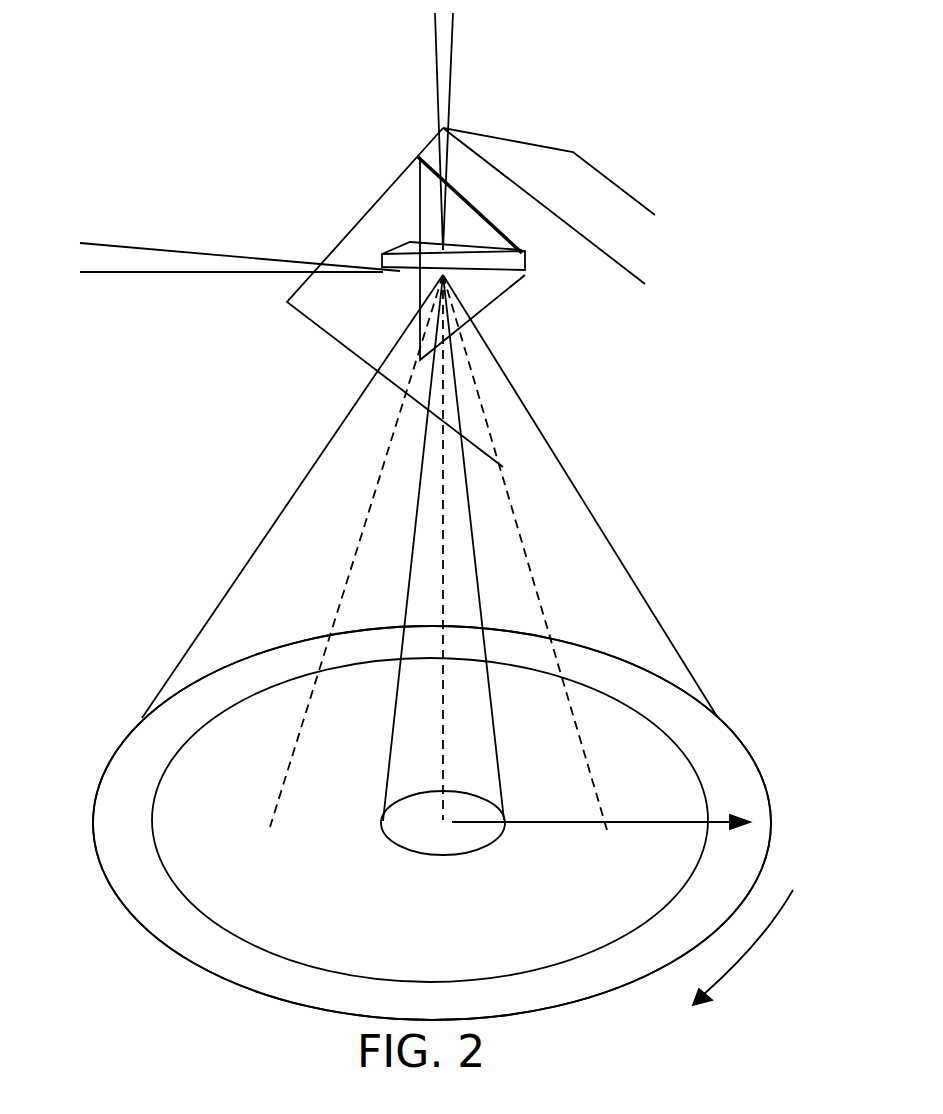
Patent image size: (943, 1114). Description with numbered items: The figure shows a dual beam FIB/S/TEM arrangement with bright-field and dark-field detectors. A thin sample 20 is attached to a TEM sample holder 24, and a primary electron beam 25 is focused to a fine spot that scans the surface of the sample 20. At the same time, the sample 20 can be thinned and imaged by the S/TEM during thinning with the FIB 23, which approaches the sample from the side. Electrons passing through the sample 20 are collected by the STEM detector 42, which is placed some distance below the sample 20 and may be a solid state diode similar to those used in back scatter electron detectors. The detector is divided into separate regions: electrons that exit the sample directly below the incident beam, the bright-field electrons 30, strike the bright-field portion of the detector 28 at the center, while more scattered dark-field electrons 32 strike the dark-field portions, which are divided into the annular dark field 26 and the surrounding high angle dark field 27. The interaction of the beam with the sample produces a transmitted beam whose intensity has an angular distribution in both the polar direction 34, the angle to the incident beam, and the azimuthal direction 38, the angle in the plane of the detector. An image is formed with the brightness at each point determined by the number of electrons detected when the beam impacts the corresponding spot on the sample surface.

The sample 20 is at (500, 253).
The FIB 23 is at (173, 260).
The TEM sample holder 24 is at (540, 382).
The primary electron beam 25 is at (447, 57).
The annular dark field 26 is at (675, 773).
The high angle dark field 27 is at (667, 697).
The bright-field portion of the detector 28 is at (457, 842).
The bright-field electrons 30 is at (442, 763).
The dark-field electrons 32 is at (292, 738).
The polar direction 34 is at (693, 822).
The azimuthal direction 38 is at (756, 946).
The STEM detector 42 is at (147, 672).